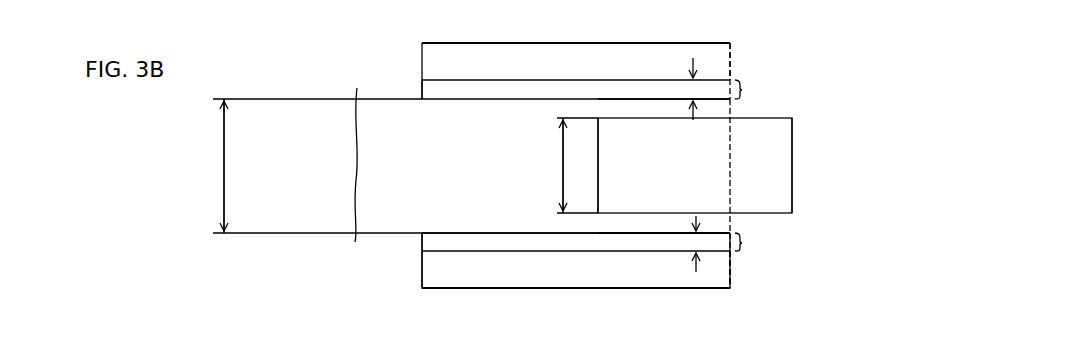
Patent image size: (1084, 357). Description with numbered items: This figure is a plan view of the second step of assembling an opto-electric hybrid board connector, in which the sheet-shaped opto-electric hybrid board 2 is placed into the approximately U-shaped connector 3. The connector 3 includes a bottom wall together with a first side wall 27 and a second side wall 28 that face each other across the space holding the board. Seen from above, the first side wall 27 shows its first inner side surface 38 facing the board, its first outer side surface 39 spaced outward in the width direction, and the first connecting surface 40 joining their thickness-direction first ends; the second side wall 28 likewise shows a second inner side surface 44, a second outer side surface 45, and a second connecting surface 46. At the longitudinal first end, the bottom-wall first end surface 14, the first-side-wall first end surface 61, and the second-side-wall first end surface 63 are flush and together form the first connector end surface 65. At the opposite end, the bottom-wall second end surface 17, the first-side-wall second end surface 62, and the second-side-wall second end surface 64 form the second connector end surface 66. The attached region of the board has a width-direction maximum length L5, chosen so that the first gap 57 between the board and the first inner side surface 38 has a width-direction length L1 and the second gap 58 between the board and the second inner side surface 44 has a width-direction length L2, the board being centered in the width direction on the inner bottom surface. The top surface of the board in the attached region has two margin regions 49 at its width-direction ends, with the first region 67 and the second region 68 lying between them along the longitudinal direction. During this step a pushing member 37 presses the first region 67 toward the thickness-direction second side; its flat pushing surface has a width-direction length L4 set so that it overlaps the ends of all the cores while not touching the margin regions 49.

The opto-electric hybrid board 2 is at (352, 170).
The connector 3 is at (419, 291).
The bottom-wall first end surface 14 is at (732, 251).
The bottom-wall second end surface 17 is at (422, 245).
The first side wall 27 is at (605, 41).
The second side wall 28 is at (566, 291).
The pushing member 37 is at (793, 163).
The first inner side surface 38 is at (502, 80).
The first outer side surface 39 is at (550, 43).
The first connecting surface 40 is at (475, 43).
The second inner side surface 44 is at (497, 252).
The second outer side surface 45 is at (632, 289).
The second connecting surface 46 is at (493, 282).
The margin region 49 is at (715, 108).
The first gap 57 is at (755, 89).
The second gap 58 is at (755, 242).
The first-side-wall first end surface 61 is at (732, 52).
The first-side-wall second end surface 62 is at (422, 60).
The second-side-wall first end surface 63 is at (732, 268).
The second-side-wall second end surface 64 is at (422, 272).
The first connector end surface 65 is at (732, 68).
The second connector end surface 66 is at (419, 86).
The first region 67 is at (677, 185).
The second region 68 is at (453, 223).
The width-direction length of first gap L1 is at (693, 90).
The width-direction length of second gap L2 is at (700, 237).
The width-direction length of pushing surface L4 is at (562, 165).
The width-direction maximum length of attached region L5 is at (207, 166).